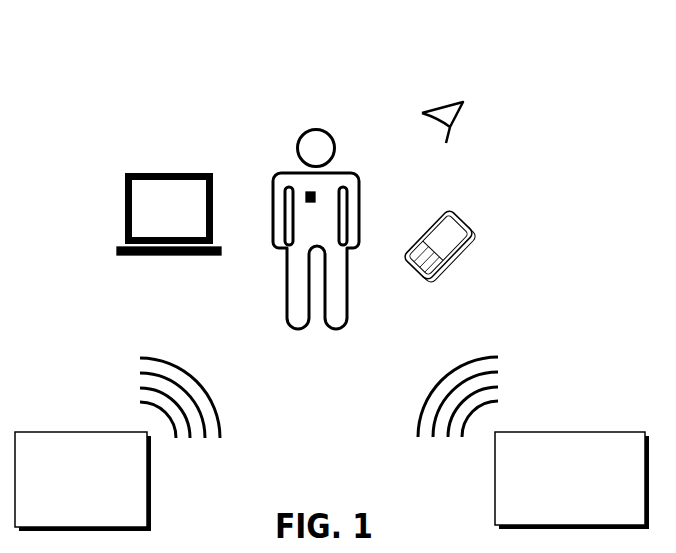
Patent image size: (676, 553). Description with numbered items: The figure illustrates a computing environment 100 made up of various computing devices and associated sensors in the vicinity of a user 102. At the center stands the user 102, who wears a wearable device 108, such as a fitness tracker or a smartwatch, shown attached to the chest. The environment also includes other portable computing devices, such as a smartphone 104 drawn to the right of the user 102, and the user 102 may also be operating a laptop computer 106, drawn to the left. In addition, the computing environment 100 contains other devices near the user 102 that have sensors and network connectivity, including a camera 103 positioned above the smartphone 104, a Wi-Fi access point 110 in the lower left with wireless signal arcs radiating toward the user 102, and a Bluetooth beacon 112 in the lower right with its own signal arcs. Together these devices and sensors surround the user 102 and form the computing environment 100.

The computing environment 100 is at (308, 66).
The user 102 is at (316, 259).
The camera 103 is at (487, 132).
The smartphone 104 is at (510, 253).
The laptop computer 106 is at (169, 244).
The wearable device 108 is at (310, 192).
The Wi-Fi access point 110 is at (117, 444).
The Bluetooth beacon 112 is at (533, 443).